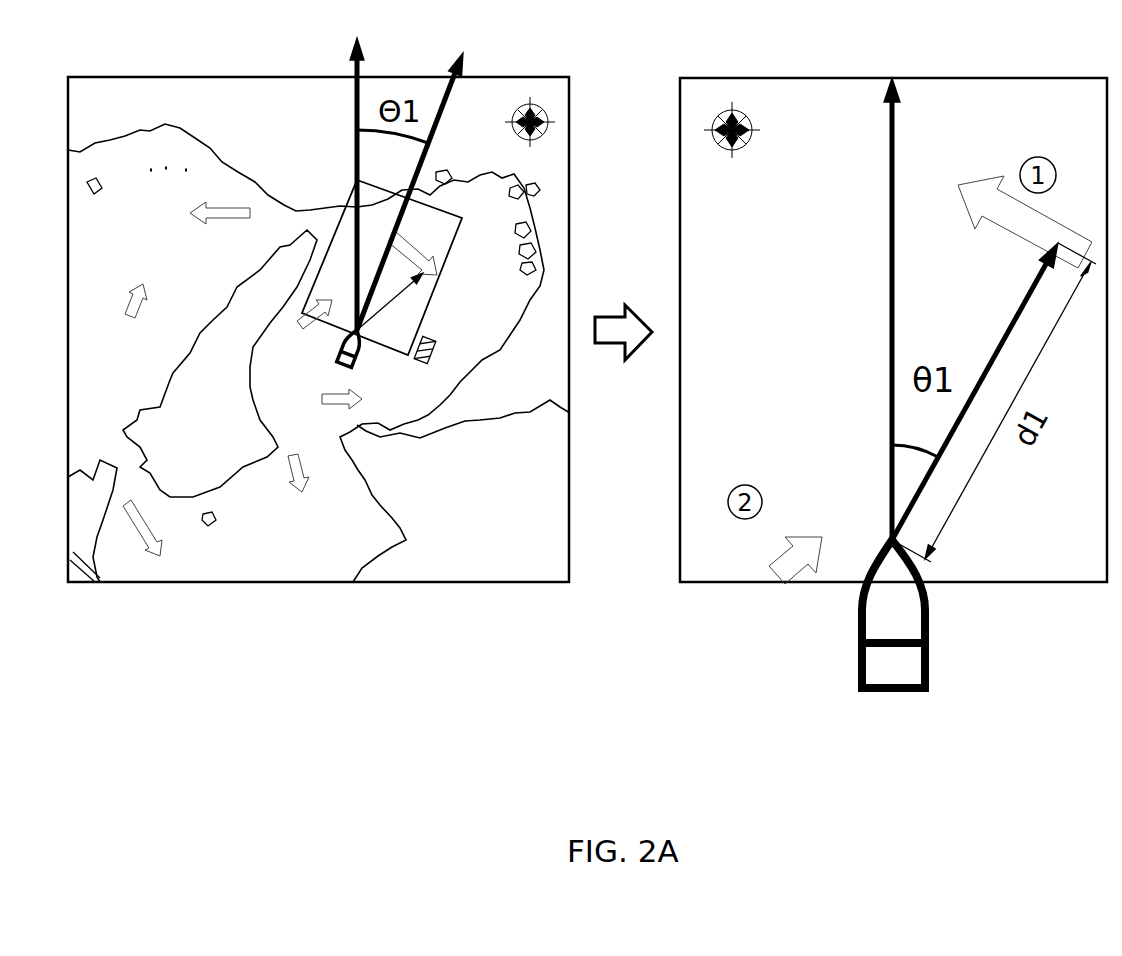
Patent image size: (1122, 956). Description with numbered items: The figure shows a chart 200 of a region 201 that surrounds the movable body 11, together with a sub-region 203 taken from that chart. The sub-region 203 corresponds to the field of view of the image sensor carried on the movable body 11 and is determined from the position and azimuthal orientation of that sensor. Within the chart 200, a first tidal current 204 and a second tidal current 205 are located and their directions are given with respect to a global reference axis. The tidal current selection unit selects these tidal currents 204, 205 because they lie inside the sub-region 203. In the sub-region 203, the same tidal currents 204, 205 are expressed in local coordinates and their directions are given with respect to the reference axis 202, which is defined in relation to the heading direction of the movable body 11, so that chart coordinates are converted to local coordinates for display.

The chart 200 is at (190, 74).
The region 201 is at (217, 150).
The reference axis 202 is at (768, 139).
The sub-region 203 is at (447, 240).
The first tidal current 204 is at (427, 275).
The second tidal current 205 is at (312, 315).
The movable body 11 is at (333, 342).